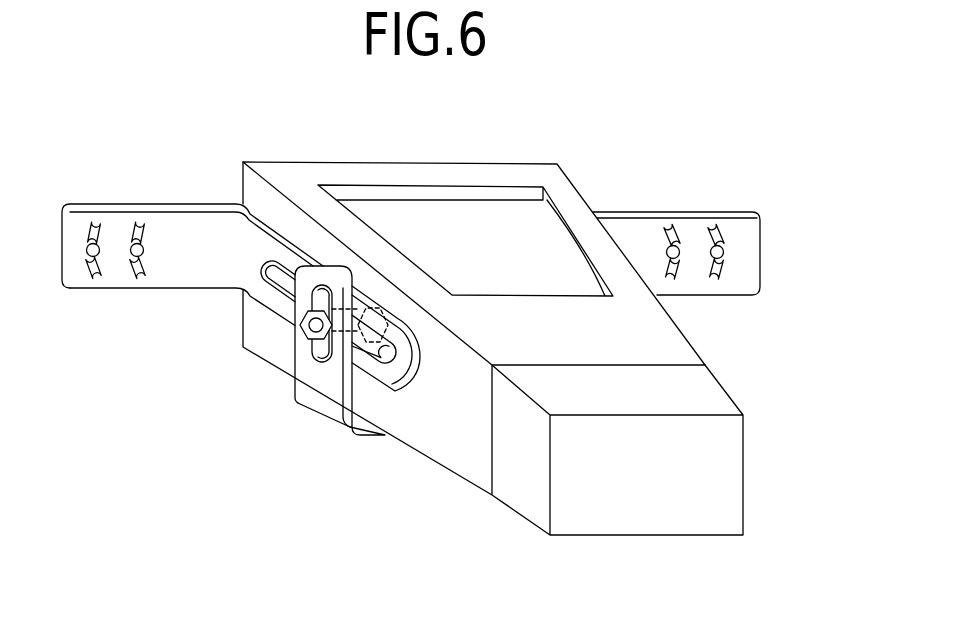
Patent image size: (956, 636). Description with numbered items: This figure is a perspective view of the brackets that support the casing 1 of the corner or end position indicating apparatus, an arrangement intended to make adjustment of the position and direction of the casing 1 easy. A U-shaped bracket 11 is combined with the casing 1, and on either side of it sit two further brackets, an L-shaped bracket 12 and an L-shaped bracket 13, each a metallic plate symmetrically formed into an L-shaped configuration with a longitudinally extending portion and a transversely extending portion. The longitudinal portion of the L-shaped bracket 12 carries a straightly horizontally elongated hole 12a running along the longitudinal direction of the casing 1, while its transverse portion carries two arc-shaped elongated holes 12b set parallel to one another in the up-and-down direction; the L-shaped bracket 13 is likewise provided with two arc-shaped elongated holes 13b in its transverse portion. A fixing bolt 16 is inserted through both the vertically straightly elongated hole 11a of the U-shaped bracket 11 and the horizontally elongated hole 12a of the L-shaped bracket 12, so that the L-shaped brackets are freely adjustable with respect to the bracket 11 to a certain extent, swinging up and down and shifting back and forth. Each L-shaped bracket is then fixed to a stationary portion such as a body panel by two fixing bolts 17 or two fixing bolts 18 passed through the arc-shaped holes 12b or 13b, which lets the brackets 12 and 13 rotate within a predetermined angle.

The casing 1 is at (513, 163).
The U-shaped bracket 11 is at (323, 402).
The vertically straightly elongated hole 11a is at (307, 406).
The L-shaped bracket 12 is at (185, 268).
The straightly horizontally elongated hole 12a is at (397, 392).
The arc-shaped elongated holes 12b is at (150, 218).
The L-shaped bracket 13 is at (743, 297).
The arc-shaped elongated holes 13b is at (718, 222).
The fixing bolt 16 is at (308, 328).
The fixing bolts 17 is at (123, 270).
The fixing bolts 18 is at (685, 263).